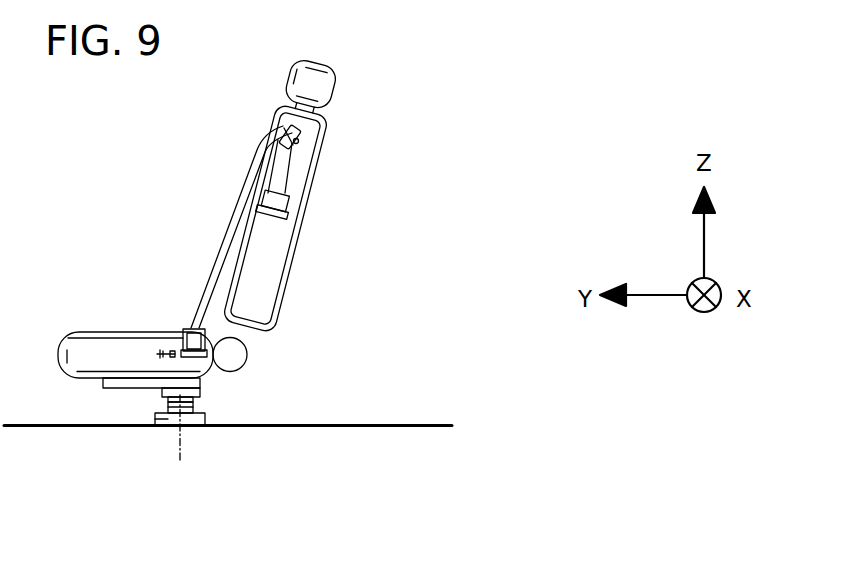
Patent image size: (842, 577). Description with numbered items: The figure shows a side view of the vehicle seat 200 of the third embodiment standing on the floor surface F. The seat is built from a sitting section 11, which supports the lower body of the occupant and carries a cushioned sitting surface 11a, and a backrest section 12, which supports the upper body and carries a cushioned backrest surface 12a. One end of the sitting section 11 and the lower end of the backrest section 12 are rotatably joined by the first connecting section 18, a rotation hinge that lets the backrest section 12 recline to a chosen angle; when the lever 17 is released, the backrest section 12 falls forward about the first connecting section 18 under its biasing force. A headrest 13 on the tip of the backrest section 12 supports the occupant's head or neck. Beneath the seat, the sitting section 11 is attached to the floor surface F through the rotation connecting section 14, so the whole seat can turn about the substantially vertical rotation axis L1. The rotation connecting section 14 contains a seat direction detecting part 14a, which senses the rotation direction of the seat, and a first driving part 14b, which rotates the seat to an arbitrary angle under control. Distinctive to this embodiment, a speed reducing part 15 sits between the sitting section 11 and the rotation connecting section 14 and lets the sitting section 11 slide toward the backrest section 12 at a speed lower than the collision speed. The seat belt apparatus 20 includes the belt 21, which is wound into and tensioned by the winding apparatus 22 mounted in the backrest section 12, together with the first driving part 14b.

The sitting section 11 is at (88, 352).
The sitting surface 11a is at (113, 334).
The backrest section 12 is at (267, 288).
The backrest surface 12a is at (269, 137).
The headrest 13 is at (322, 84).
The rotation connecting section 14 is at (212, 414).
The seat direction detecting part 14a is at (168, 423).
The first driving part 14b is at (197, 400).
The speed reducing part 15 is at (123, 383).
The lever 17 is at (159, 350).
The first connecting section 18 is at (237, 362).
The seat belt apparatus 20 is at (255, 221).
The belt 21 is at (222, 270).
The winding apparatus 22 is at (281, 208).
The floor surface F is at (388, 425).
The rotation axis L1 is at (184, 450).
The vehicle seat 200 is at (154, 558).